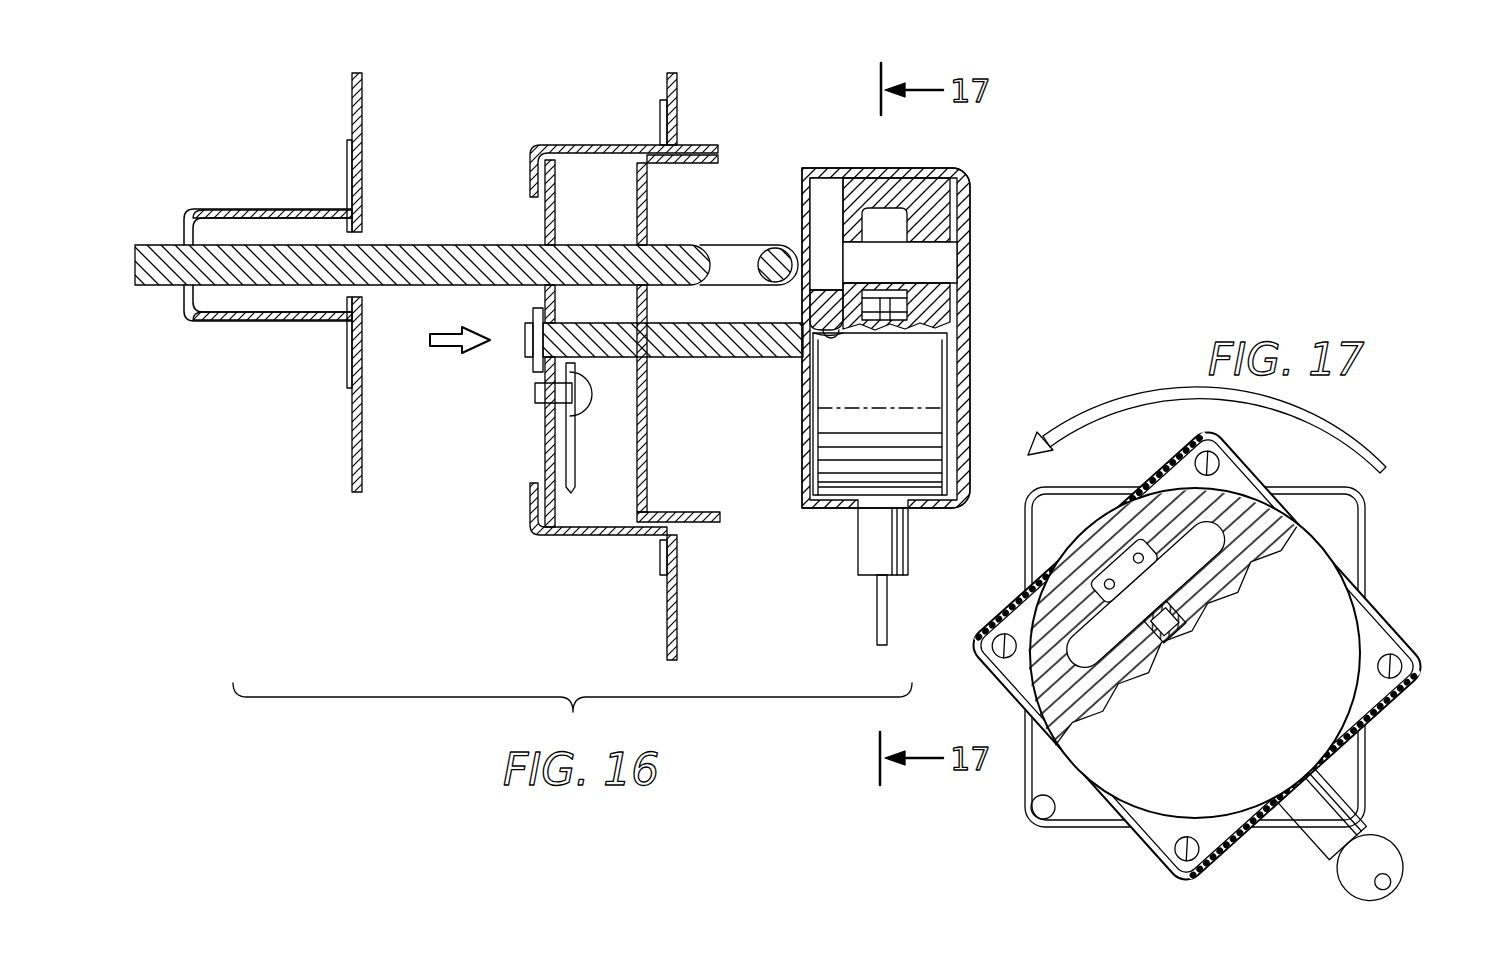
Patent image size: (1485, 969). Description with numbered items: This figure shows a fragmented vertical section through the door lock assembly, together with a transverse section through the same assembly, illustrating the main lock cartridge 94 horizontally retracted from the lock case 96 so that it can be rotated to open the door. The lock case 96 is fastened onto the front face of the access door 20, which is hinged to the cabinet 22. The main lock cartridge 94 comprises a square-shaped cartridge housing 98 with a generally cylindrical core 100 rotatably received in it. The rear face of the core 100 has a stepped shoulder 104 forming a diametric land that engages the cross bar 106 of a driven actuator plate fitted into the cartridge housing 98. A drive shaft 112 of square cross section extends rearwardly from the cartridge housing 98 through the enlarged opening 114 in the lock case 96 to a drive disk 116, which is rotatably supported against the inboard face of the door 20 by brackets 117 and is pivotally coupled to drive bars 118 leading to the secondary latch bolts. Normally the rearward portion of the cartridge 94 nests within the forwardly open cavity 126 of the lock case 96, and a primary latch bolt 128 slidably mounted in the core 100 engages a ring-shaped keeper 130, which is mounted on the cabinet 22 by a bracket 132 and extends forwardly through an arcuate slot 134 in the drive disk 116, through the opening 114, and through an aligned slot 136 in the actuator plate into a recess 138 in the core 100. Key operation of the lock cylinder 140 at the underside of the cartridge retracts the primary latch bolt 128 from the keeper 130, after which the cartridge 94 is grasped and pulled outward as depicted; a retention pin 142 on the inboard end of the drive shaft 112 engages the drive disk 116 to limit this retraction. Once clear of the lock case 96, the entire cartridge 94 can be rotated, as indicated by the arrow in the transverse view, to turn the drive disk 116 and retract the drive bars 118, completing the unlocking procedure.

In FIG. 16, the access door 20 is at (667, 628).
In FIG. 16, the cabinet 22 is at (352, 452).
In FIG. 16, the main lock cartridge 94 is at (1028, 160).
In FIG. 17, the main lock cartridge 94 is at (1172, 805).
In FIG. 16, the lock case 96 is at (668, 516).
In FIG. 17, the lock case 96 is at (1367, 556).
In FIG. 16, the cartridge housing 98 is at (970, 290).
In FIG. 16, the core 100 is at (823, 482).
In FIG. 17, the core 100 is at (1325, 720).
In FIG. 16, the stepped shoulder 104 is at (845, 338).
In FIG. 16, the cross bar 106 is at (798, 318).
In FIG. 16, the drive shaft 112 is at (752, 360).
In FIG. 16, the opening 114 is at (648, 385).
In FIG. 16, the drive disk 116 is at (543, 440).
In FIG. 16, the brackets 117 is at (586, 146).
In FIG. 16, the drive bars 118 is at (574, 460).
In FIG. 16, the cavity 126 is at (675, 163).
In FIG. 17, the cavity 126 is at (1042, 816).
In FIG. 16, the primary latch bolt 128 is at (905, 318).
In FIG. 17, the primary latch bolt 128 is at (1185, 640).
In FIG. 16, the keeper 130 is at (425, 245).
In FIG. 16, the bracket 132 is at (226, 212).
In FIG. 16, the arcuate slot 134 is at (544, 240).
In FIG. 16, the slot 136 is at (802, 243).
In FIG. 16, the recess 138 is at (950, 247).
In FIG. 17, the recess 138 is at (1268, 490).
In FIG. 16, the lock cylinder 140 is at (868, 555).
In FIG. 17, the lock cylinder 140 is at (1325, 832).
In FIG. 16, the retention pin 142 is at (533, 320).